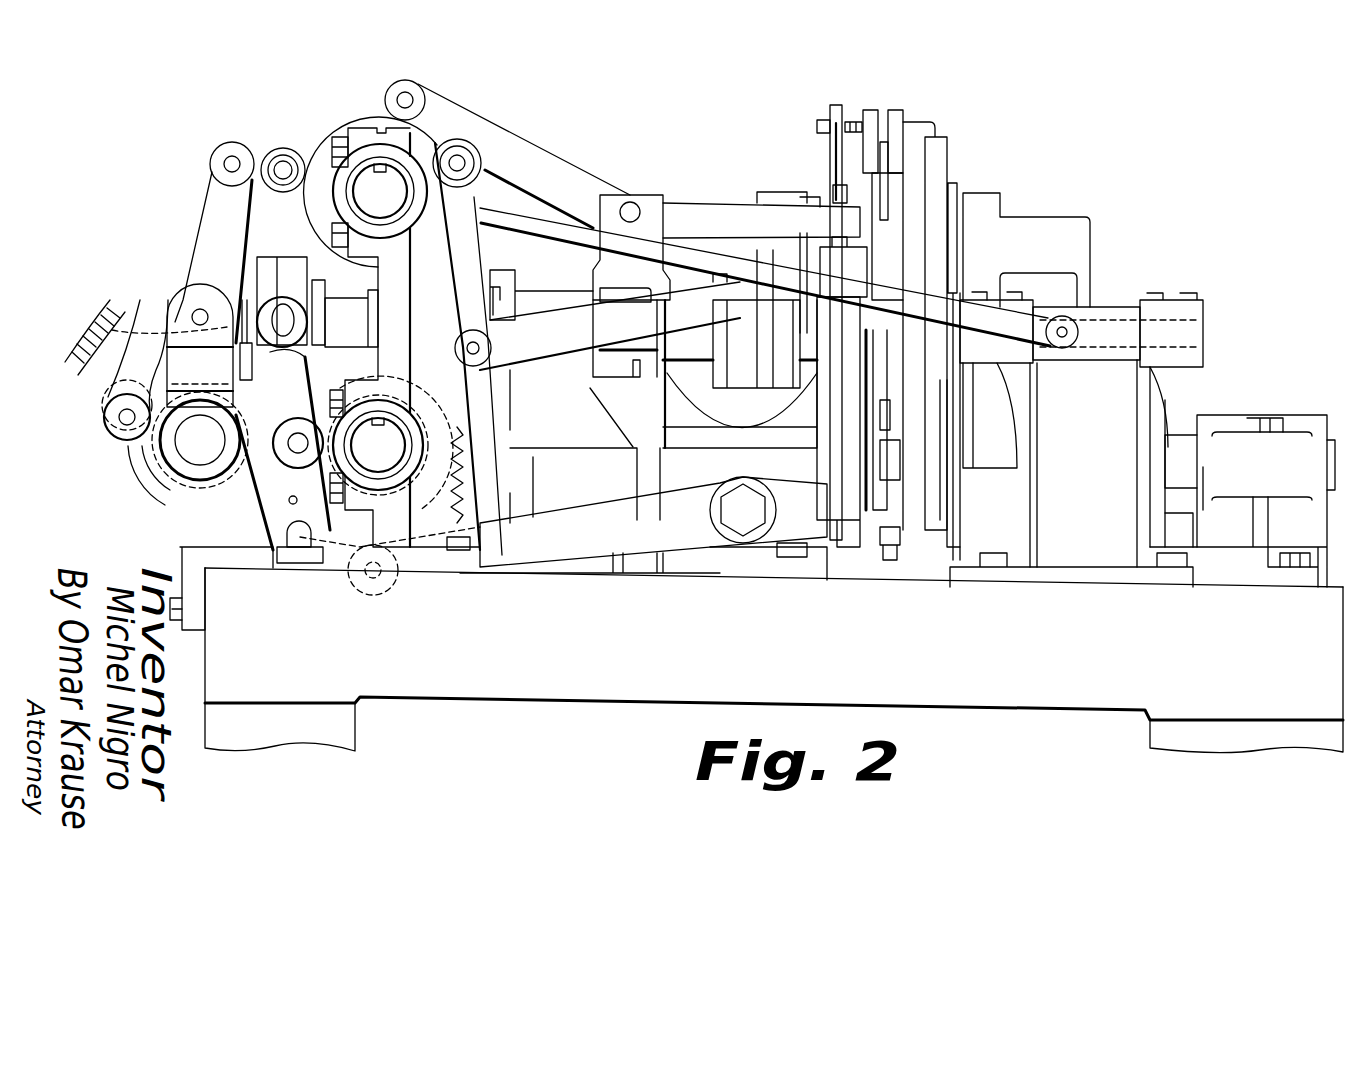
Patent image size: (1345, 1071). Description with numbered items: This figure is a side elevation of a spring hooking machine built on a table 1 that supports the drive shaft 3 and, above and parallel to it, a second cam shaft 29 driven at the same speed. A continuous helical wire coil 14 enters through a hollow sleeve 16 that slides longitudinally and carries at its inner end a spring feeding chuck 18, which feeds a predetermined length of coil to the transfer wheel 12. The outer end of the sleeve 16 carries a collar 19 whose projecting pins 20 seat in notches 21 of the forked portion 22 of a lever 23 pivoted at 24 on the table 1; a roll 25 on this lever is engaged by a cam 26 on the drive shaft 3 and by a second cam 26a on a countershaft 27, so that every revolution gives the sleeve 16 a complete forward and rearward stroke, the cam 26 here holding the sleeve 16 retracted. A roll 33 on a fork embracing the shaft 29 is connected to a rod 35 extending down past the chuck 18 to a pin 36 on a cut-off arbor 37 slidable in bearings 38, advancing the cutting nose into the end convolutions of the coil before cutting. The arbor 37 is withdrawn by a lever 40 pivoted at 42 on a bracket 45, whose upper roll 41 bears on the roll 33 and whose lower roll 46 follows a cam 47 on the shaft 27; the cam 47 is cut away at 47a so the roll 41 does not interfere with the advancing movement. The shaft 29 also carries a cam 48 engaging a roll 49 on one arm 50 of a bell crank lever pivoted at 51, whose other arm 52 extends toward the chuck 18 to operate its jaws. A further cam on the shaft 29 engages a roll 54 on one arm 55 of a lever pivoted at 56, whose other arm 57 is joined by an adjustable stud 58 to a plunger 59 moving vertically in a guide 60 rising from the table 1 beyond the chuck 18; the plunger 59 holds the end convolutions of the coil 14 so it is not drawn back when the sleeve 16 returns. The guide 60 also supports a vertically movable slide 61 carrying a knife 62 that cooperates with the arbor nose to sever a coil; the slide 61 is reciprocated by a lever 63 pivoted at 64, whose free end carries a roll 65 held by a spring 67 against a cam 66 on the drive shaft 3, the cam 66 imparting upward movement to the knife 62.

The table 1 is at (650, 680).
The drive shaft 3 is at (382, 443).
The transfer wheel 12 is at (895, 237).
The continuous helical wire coil 14 is at (100, 318).
The hollow sleeve 16 is at (358, 297).
The spring feeding chuck 18 is at (663, 378).
The collar 19 is at (262, 272).
The projecting pins 20 is at (278, 318).
The notches 21 is at (247, 450).
The forked portion 22 is at (318, 337).
The lever 23 is at (180, 548).
The pivot 24 is at (297, 548).
The roll 25 is at (323, 535).
The cam 26 is at (386, 438).
The second cam 26a is at (293, 407).
The countershaft 27 is at (185, 443).
The second cam shaft 29 is at (372, 188).
The roll 33 is at (283, 150).
The rod 35 is at (948, 302).
The pin 36 is at (1066, 330).
The cut-off arbor 37 is at (1100, 348).
The bearings 38 is at (1175, 340).
The lever 40 is at (218, 208).
The roll 41 is at (230, 148).
The pivot 42 is at (197, 312).
The bracket 45 is at (233, 550).
The roll 46 is at (110, 422).
The cam 47 is at (152, 470).
The cut-away portion 47a is at (170, 413).
The cam 48 is at (322, 160).
The roll 49 is at (468, 150).
The arm 50 is at (462, 214).
The pivot 51 is at (487, 362).
The arm 52 is at (563, 340).
The roll 54 is at (412, 94).
The arm 55 is at (565, 188).
The pivot 56 is at (632, 208).
The arm 57 is at (712, 216).
The adjustable stud 58 is at (838, 195).
The plunger 59 is at (832, 228).
The guide 60 is at (850, 382).
The slide 61 is at (868, 512).
The knife 62 is at (882, 432).
The lever 63 is at (787, 527).
The pivot 64 is at (735, 517).
The roll 65 is at (395, 585).
The cam 66 is at (418, 500).
The spring 67 is at (481, 533).